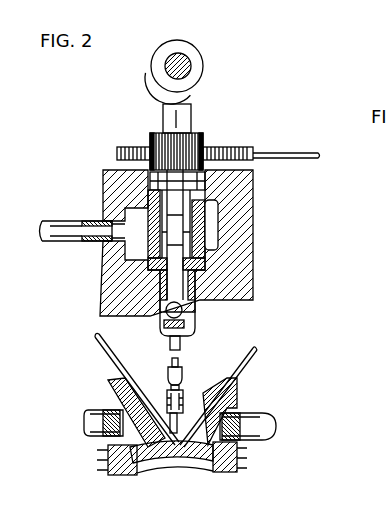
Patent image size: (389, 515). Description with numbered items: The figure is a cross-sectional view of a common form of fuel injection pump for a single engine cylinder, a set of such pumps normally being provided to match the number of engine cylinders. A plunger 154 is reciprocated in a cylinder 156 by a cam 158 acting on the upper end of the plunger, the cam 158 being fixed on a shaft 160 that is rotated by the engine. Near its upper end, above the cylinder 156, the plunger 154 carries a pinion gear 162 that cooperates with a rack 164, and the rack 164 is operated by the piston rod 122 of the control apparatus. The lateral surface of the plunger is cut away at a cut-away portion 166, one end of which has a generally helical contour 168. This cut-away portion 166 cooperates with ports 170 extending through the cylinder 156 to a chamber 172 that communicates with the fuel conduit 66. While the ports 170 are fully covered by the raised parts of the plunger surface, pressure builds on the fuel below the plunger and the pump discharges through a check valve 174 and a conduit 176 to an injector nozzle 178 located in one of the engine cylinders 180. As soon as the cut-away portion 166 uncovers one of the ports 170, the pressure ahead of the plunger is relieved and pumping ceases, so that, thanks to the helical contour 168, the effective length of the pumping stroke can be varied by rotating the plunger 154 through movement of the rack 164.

The fuel supply pipe 66 is at (58, 221).
The piston rod 122 is at (296, 159).
The plunger 154 is at (192, 123).
The cylinder 156 is at (126, 244).
The cam 158 is at (151, 79).
The shaft 160 is at (191, 64).
The pinion gear 162 is at (150, 136).
The rack 164 is at (238, 146).
The cut-away portion 166 is at (220, 204).
The helical contour 168 is at (237, 249).
The ports 170 is at (238, 226).
The chamber 172 is at (120, 200).
The check valve 174 is at (192, 328).
The conduit 176 is at (180, 363).
The injector nozzle 178 is at (167, 390).
The cylinders 180 is at (130, 473).